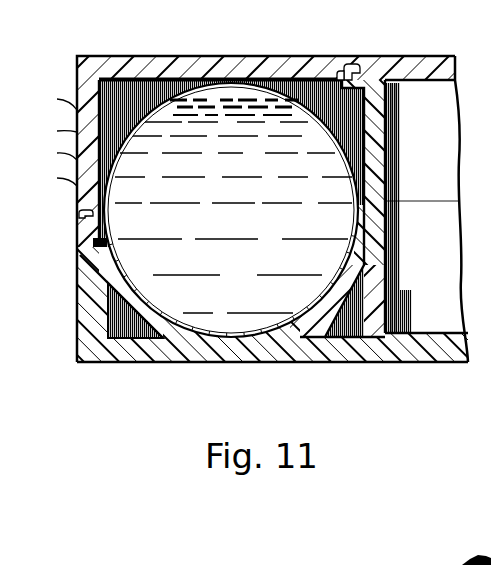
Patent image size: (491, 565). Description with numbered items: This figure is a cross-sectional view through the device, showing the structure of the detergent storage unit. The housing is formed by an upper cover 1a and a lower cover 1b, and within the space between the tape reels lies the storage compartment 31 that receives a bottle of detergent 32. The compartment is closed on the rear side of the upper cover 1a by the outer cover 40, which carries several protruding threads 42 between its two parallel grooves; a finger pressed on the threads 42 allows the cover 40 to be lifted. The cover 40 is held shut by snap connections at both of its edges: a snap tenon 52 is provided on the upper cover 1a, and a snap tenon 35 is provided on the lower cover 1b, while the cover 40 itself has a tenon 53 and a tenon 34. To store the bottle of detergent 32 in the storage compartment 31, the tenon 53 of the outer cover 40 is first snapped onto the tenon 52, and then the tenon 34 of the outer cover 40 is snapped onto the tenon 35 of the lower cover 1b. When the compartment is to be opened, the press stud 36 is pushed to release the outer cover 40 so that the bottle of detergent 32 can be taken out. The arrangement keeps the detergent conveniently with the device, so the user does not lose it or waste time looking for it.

The upper cover 1a is at (422, 56).
The lower cover 1b is at (393, 355).
The storage compartment 31 is at (348, 104).
The bottle of detergent 32 is at (152, 110).
The tenon 34 is at (96, 243).
The snap tenon 35 is at (78, 215).
The press stud 36 is at (70, 190).
The cover 40 is at (133, 57).
The protruding threads 42 is at (55, 136).
The snap tenon 52 is at (348, 66).
The tenon 53 is at (341, 74).